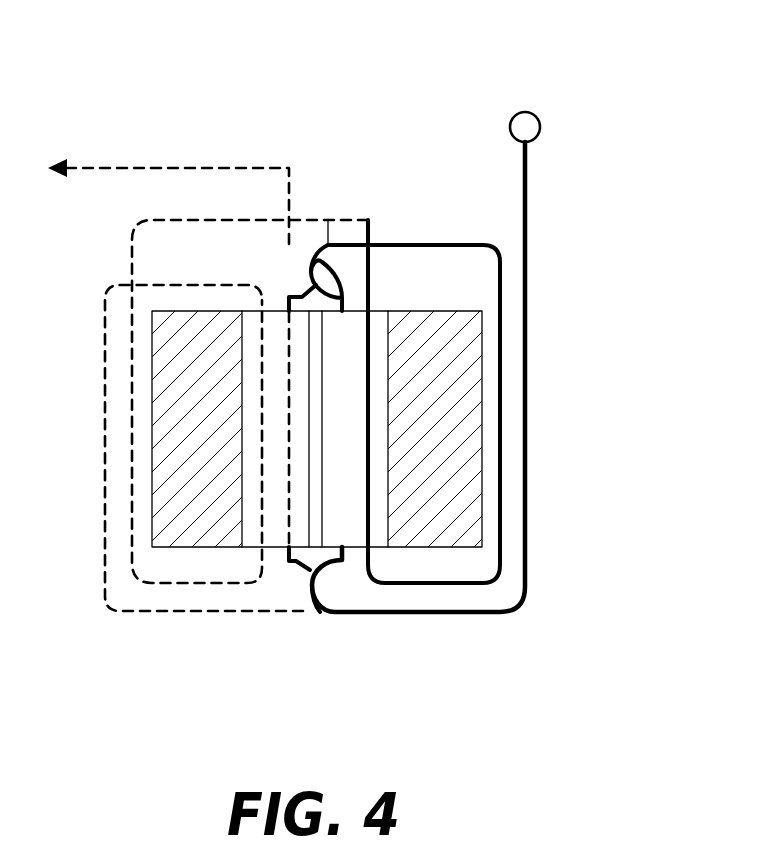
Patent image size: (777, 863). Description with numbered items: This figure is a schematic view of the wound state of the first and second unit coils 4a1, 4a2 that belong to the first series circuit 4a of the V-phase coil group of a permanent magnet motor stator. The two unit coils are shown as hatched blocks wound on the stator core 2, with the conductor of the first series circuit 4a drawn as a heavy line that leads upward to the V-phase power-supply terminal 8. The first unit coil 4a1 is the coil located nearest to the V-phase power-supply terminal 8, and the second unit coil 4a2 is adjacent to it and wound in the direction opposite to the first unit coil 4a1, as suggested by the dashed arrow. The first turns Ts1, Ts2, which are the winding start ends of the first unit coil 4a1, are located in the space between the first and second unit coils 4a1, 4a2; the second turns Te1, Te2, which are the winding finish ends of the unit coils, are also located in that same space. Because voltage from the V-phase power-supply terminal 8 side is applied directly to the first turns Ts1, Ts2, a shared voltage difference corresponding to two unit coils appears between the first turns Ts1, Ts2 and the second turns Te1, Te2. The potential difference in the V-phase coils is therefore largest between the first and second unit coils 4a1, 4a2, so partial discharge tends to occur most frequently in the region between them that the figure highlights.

The stator core 2 is at (153, 397).
The first series circuit 4a is at (528, 228).
The first unit coil 4a1 is at (447, 613).
The second unit coil 4a2 is at (200, 613).
The V-phase power-supply terminal 8 is at (529, 111).
The second turn Te1 is at (307, 609).
The second turn Te2 is at (310, 254).
The first turn Ts1 is at (332, 613).
The first turn Ts2 is at (330, 218).